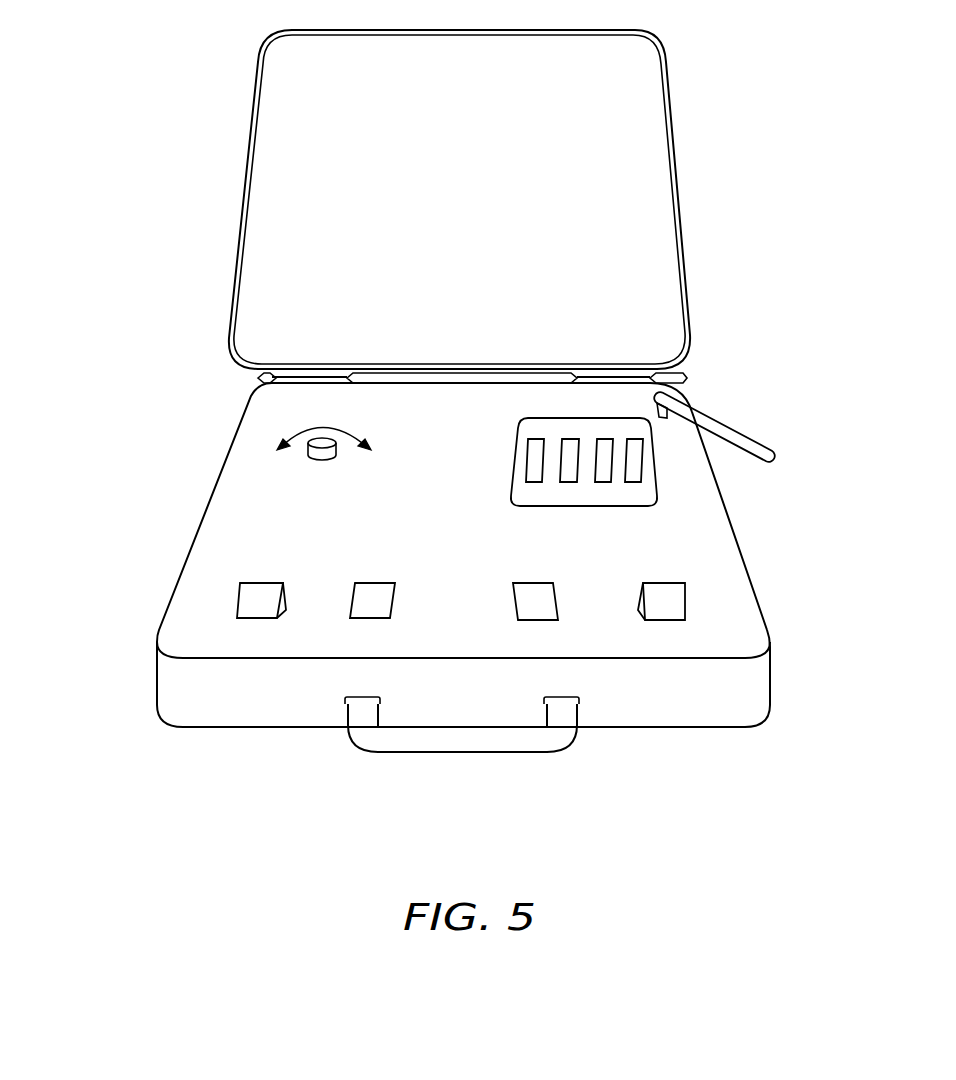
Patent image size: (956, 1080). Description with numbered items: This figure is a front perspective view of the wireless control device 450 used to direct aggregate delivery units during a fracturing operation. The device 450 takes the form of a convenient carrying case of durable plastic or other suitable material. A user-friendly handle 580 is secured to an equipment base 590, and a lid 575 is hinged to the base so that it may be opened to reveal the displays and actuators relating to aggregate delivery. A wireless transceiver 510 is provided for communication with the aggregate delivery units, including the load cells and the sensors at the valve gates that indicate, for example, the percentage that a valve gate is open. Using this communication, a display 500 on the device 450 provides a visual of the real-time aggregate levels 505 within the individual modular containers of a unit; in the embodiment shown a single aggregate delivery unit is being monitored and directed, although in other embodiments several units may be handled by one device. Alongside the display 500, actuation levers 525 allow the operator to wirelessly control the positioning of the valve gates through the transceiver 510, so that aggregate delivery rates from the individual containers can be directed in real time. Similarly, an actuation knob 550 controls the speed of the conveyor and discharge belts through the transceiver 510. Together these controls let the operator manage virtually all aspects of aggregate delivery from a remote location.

The wireless control device 450 is at (133, 78).
The display 500 is at (598, 426).
The aggregate levels 505 is at (537, 462).
The wireless transceiver 510 is at (683, 408).
The actuation levers 525 is at (253, 598).
The actuation knob 550 is at (293, 431).
The lid 575 is at (482, 210).
The handle 580 is at (397, 746).
The equipment base 590 is at (712, 709).